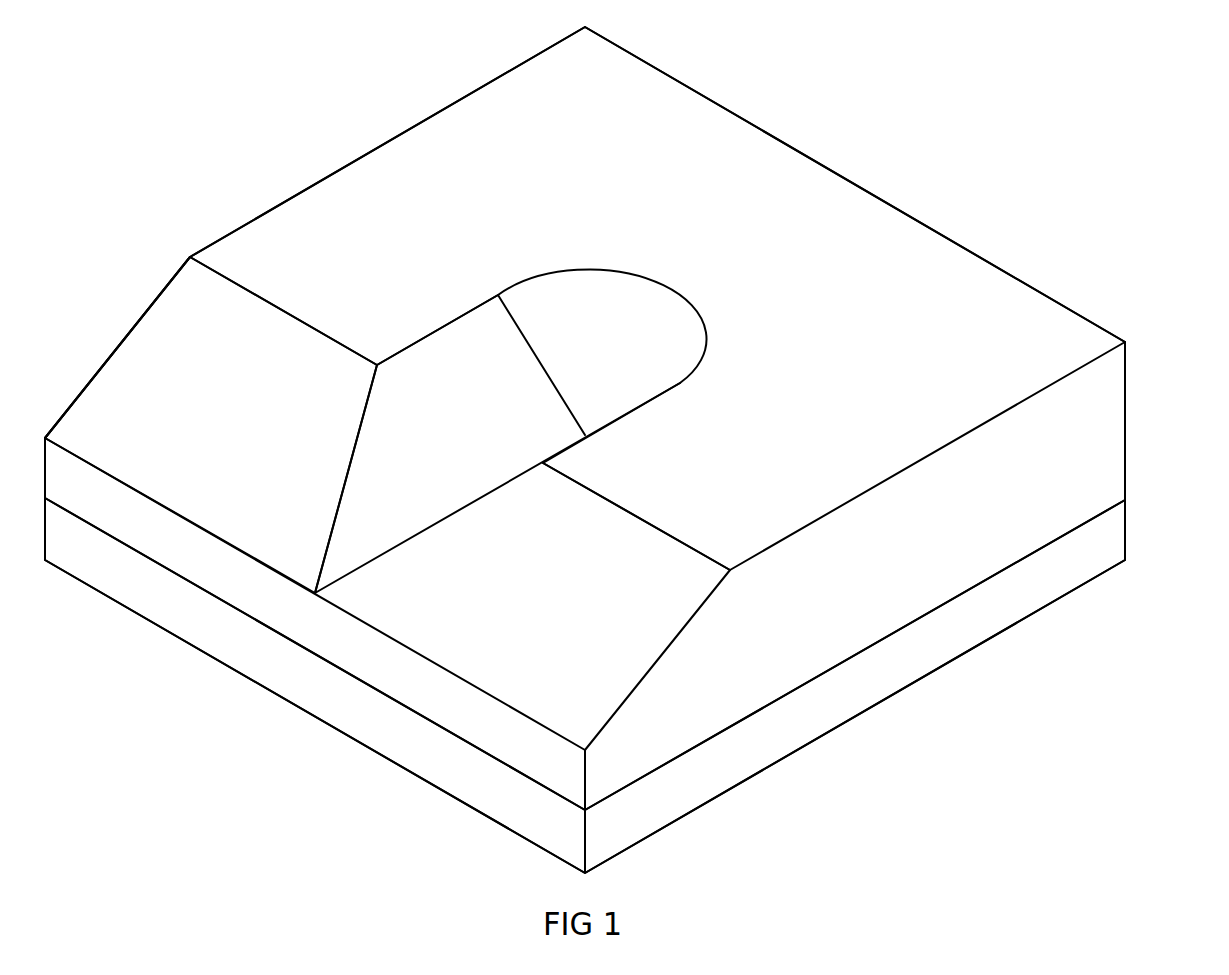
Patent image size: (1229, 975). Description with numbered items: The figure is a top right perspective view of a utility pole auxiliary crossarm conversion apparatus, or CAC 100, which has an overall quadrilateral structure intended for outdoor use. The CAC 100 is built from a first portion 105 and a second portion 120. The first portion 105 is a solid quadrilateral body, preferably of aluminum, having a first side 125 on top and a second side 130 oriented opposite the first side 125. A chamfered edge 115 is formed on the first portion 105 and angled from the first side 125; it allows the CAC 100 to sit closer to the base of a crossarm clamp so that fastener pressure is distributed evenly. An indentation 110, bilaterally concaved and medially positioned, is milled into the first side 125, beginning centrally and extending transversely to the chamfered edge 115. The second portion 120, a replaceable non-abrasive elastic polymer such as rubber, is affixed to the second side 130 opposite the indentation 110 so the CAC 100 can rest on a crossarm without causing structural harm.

The utility pole auxiliary crossarm conversion apparatus 100 is at (140, 103).
The first portion 105 is at (467, 95).
The indentation 110 is at (447, 363).
The chamfered edge 115 is at (263, 487).
The second portion 120 is at (1018, 623).
The first side 125 is at (891, 365).
The second side 130 is at (1109, 512).